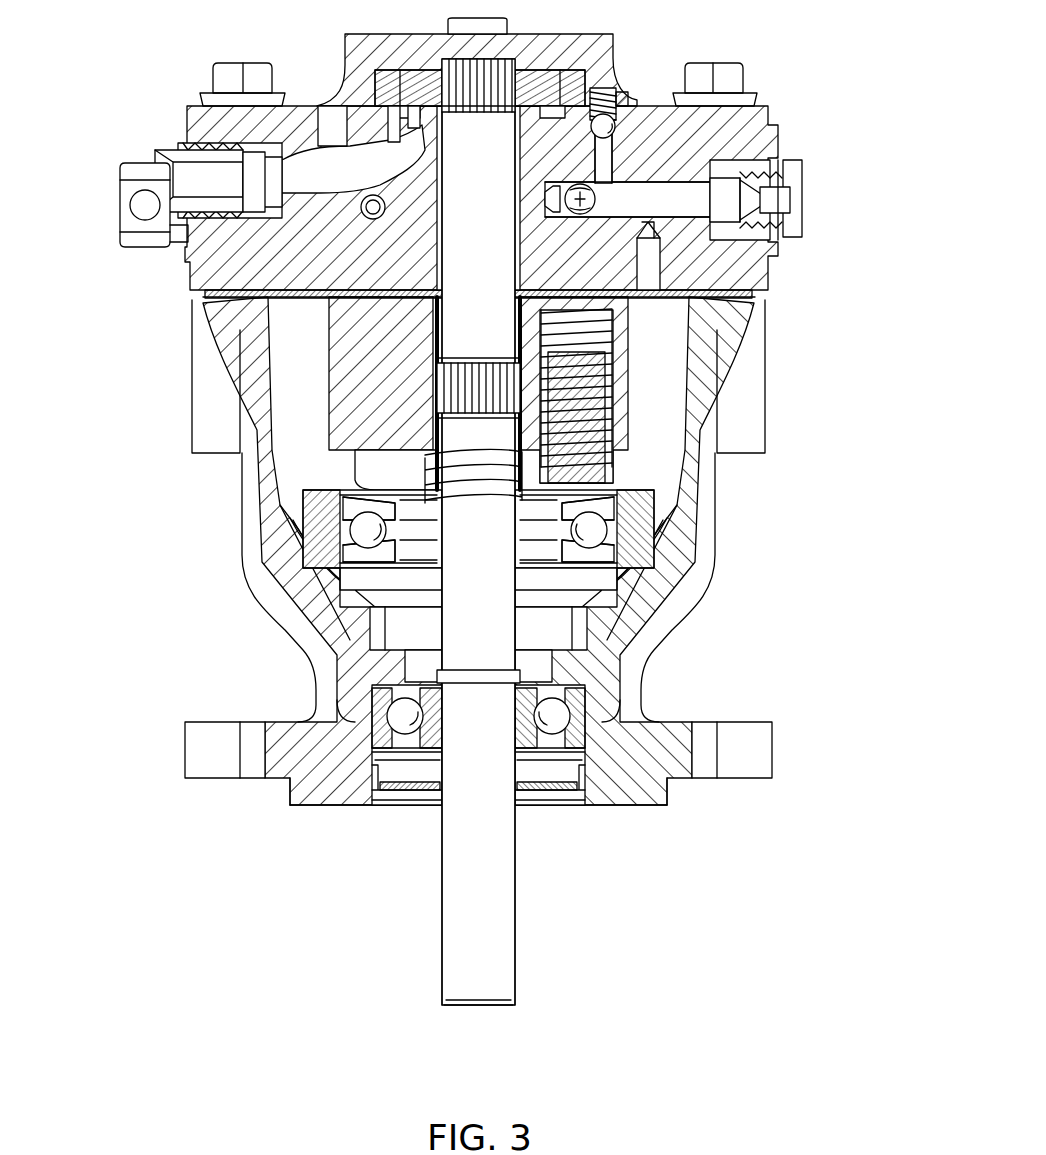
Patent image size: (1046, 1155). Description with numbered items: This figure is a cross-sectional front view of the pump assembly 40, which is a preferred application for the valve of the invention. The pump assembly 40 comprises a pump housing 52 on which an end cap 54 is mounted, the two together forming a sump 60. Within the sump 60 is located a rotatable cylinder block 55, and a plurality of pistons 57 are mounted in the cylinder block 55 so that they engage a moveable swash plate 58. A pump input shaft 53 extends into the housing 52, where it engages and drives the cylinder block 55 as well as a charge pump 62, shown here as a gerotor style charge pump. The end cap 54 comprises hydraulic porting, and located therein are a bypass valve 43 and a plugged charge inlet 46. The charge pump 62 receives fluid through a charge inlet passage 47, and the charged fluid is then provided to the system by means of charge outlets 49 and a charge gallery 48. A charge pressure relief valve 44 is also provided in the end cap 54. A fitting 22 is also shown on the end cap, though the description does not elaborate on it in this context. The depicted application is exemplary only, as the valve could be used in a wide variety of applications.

The pump assembly 40 is at (812, 68).
The fitting 22 is at (585, 215).
The bypass valve 43 is at (120, 187).
The charge pressure relief valve 44 is at (604, 126).
The charge inlet 46 is at (157, 155).
The charge inlet passage 47 is at (323, 173).
The charge gallery 48 is at (613, 211).
The charge outlets 49 is at (553, 190).
The pump housing 52 is at (250, 578).
The pump input shaft 53 is at (517, 906).
The end cap 54 is at (727, 135).
The cylinder block 55 is at (628, 368).
The pistons 57 is at (613, 472).
The swash plate 58 is at (640, 512).
The sump 60 is at (300, 457).
The charge pump 62 is at (570, 33).